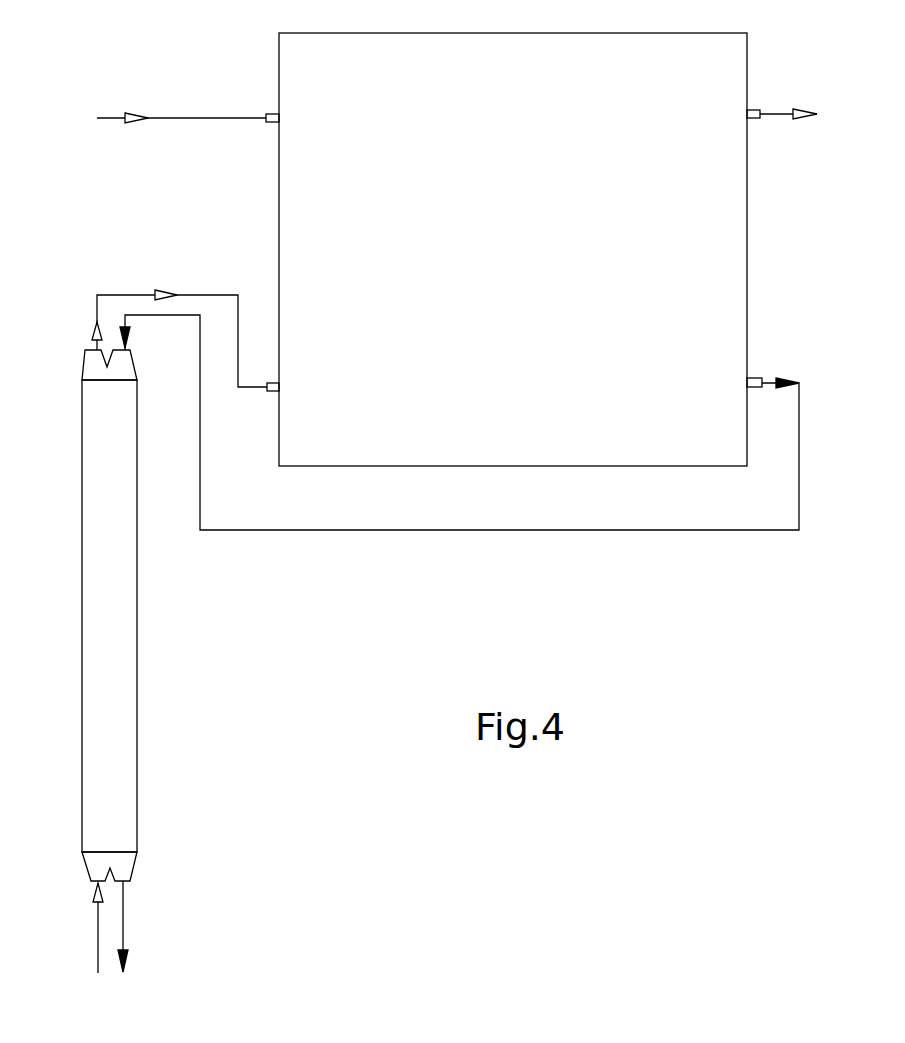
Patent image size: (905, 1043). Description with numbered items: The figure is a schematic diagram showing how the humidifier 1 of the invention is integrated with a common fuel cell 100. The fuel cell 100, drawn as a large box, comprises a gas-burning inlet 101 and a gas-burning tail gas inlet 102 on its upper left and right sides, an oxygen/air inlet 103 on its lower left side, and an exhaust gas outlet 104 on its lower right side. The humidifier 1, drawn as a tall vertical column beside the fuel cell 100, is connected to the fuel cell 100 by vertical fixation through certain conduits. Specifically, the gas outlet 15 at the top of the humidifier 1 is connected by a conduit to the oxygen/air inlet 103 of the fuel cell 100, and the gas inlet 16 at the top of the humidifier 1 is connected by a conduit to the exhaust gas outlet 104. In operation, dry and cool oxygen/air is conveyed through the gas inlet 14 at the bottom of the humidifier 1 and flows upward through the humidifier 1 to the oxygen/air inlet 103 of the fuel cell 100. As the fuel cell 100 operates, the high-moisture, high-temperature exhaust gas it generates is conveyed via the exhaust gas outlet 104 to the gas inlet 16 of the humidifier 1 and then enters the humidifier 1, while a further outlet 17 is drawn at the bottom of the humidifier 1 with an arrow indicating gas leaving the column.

The humidifier 1 is at (138, 720).
The gas inlet 14 is at (93, 882).
The gas outlet 15 is at (85, 350).
The gas inlet 16 is at (125, 350).
The column bottom outlet 17 is at (128, 882).
The fuel cell 100 is at (512, 234).
The gas-burning inlet 101 is at (272, 113).
The gas-burning tail gas inlet 102 is at (753, 108).
The oxygen/air inlet 103 is at (270, 392).
The exhaust gas outlet 104 is at (755, 380).